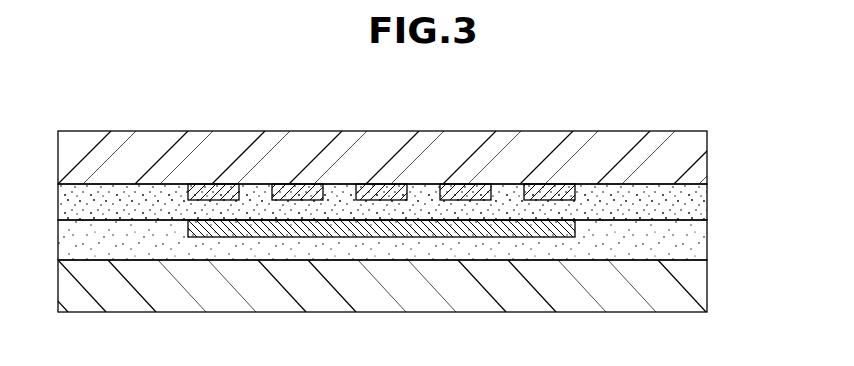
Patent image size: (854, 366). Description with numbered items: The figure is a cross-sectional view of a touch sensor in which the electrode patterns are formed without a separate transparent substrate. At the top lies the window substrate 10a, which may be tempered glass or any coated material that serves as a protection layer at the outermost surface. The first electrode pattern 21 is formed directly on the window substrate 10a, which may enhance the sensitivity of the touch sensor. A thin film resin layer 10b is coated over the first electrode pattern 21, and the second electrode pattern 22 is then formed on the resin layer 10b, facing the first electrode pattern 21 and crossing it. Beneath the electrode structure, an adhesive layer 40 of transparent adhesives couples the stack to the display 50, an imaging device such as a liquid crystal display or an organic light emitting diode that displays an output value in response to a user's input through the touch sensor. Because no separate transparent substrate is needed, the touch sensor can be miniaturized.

The window substrate 10a is at (683, 157).
The thin film resin layer 10b is at (685, 207).
The first electrode pattern 21 is at (548, 188).
The second electrode pattern 22 is at (550, 237).
The adhesive layer 40 is at (685, 247).
The display 50 is at (685, 290).